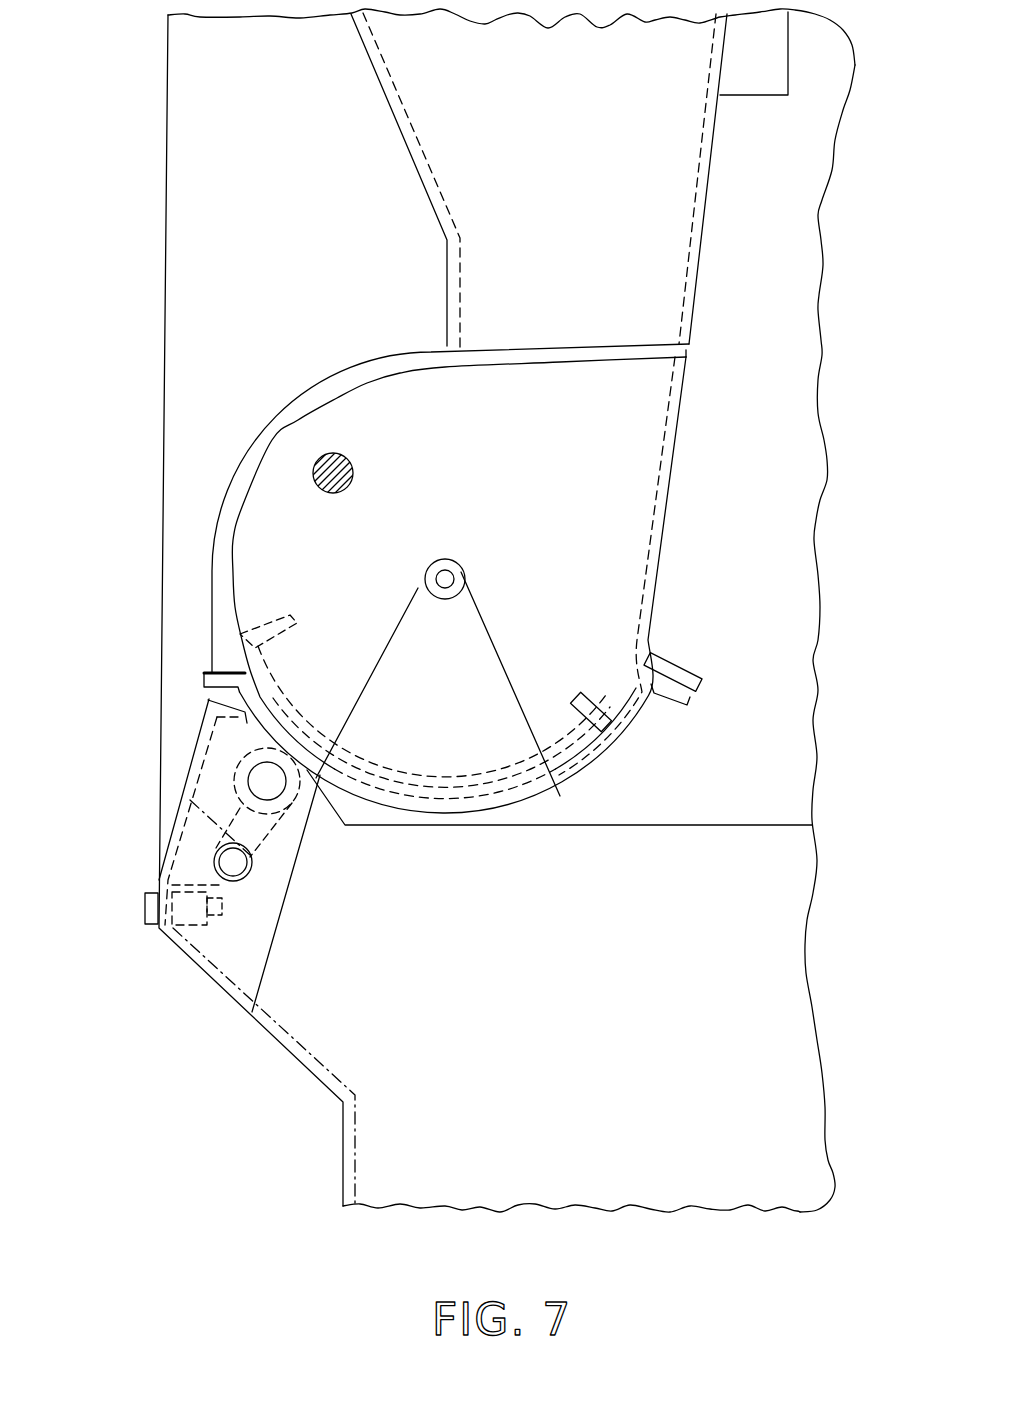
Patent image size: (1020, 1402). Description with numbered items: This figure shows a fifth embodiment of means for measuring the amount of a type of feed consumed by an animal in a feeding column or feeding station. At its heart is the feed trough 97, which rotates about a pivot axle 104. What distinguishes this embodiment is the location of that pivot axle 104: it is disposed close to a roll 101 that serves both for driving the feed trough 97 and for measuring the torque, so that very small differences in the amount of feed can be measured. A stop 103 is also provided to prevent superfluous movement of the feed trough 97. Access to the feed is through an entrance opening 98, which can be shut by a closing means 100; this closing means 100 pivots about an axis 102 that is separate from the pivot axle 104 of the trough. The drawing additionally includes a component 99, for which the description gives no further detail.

The feed trough 97 is at (541, 787).
The entrance opening 98 is at (306, 405).
The mounting bracket 99 is at (238, 963).
The closing means 100 is at (490, 738).
The roll 101 is at (246, 772).
The axis 102 is at (565, 564).
The stop 103 is at (666, 670).
The pivot axle 104 is at (440, 456).